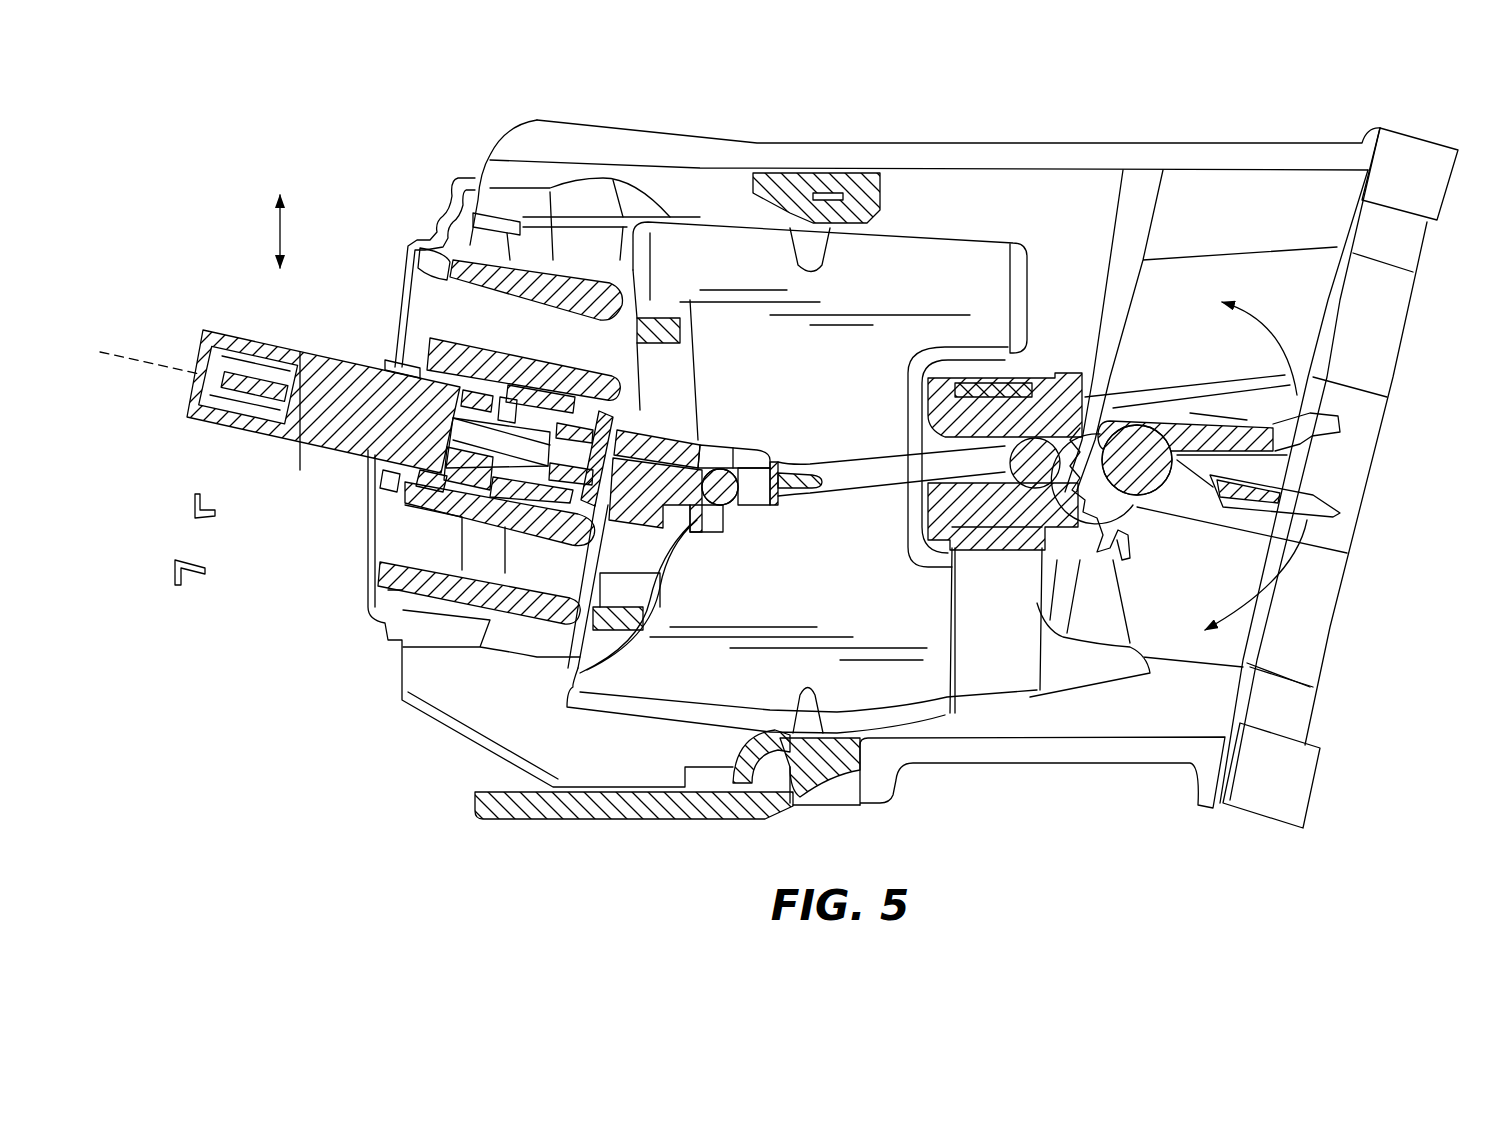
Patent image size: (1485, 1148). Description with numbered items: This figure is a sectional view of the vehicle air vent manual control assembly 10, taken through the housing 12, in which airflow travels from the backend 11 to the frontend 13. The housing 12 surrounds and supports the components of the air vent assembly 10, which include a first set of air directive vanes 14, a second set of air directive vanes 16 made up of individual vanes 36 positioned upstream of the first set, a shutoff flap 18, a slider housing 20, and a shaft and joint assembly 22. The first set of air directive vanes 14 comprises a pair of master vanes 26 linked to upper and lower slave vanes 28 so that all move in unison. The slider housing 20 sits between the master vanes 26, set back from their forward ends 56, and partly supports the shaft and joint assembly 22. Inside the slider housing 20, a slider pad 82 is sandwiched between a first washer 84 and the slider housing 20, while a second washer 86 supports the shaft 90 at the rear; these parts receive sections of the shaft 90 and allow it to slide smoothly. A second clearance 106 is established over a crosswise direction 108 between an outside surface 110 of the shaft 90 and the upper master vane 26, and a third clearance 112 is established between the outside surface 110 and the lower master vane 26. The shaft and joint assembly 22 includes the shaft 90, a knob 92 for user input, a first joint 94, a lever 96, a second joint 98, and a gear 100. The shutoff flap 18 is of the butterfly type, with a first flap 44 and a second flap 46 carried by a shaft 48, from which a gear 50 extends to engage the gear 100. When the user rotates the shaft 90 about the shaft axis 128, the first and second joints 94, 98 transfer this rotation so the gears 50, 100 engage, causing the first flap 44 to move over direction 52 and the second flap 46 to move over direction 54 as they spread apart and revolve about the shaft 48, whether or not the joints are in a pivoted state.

The vehicle air vent manual control assembly 10 is at (340, 563).
The backend 11 is at (1410, 302).
The housing 12 is at (1147, 140).
The frontend 13 is at (453, 190).
The first set of air directive vanes 14 is at (432, 262).
The second set of air directive vanes 16 is at (930, 262).
The shutoff flap 18 is at (1175, 425).
The slider housing 20 is at (597, 385).
The shaft and joint assembly 22 is at (343, 460).
The master vanes 26 is at (410, 350).
The slave vanes 28 is at (433, 267).
The vanes 36 is at (885, 273).
The first flap 44 is at (1243, 437).
The second flap 46 is at (1247, 510).
The shaft 48 is at (1130, 460).
The gear 50 is at (1103, 542).
The direction 52 is at (1280, 345).
The direction 54 is at (1277, 567).
The forward ends 56 is at (387, 477).
The slider pad 82 is at (502, 430).
The first washer 84 is at (473, 490).
The second washer 86 is at (625, 405).
The shaft 90 is at (530, 438).
The knob 92 is at (223, 430).
The first joint 94 is at (702, 442).
The lever 96 is at (863, 473).
The second joint 98 is at (1033, 462).
The gear 100 is at (1000, 510).
The second clearance 106 is at (403, 365).
The crosswise direction 108 is at (277, 230).
The outside surface 110 is at (323, 350).
The third clearance 112 is at (427, 477).
The shaft axis 128 is at (133, 362).